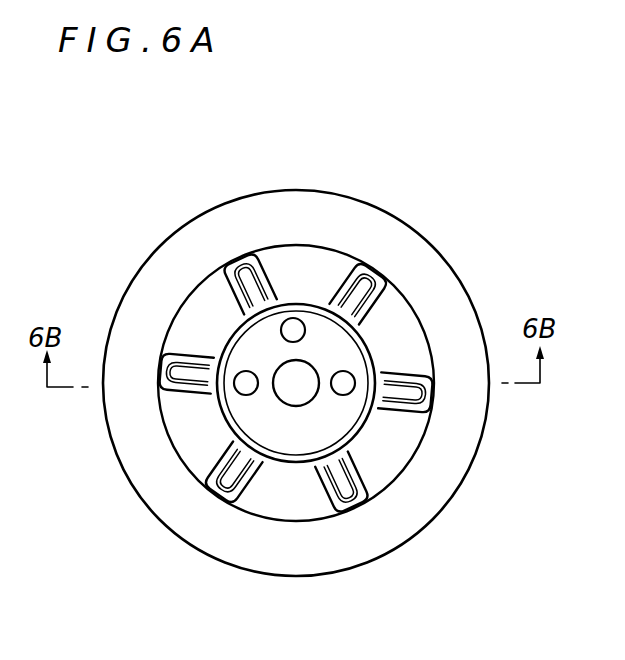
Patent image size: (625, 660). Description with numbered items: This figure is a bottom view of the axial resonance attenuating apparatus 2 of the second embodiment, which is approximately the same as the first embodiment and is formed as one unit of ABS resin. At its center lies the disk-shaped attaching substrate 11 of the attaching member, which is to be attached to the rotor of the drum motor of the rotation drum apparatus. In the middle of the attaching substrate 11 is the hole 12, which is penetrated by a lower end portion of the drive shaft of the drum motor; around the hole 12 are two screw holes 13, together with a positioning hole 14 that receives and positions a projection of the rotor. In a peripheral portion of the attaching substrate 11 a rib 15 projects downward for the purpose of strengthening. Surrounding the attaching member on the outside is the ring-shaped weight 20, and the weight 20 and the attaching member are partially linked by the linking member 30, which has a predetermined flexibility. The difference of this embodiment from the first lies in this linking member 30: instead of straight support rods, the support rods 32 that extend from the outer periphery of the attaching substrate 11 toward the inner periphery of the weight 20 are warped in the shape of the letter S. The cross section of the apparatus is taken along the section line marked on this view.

The axial resonance attenuating apparatus 2 is at (437, 185).
The attaching substrate 11 is at (240, 346).
The hole 12 is at (291, 405).
The screw holes 13 is at (238, 392).
The positioning hole 14 is at (298, 323).
The rib 15 is at (360, 335).
The weight 20 is at (470, 477).
The linking member 30 is at (398, 423).
The support rods 32 is at (237, 283).